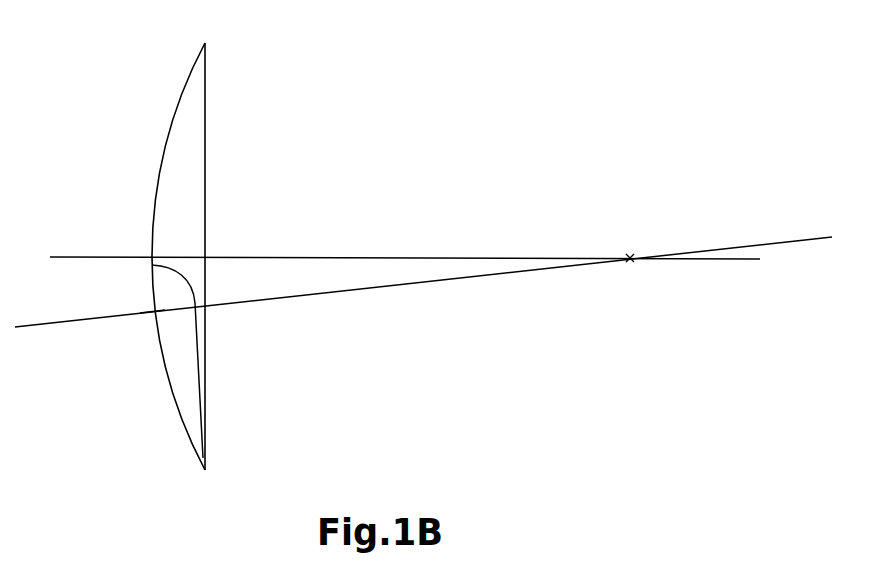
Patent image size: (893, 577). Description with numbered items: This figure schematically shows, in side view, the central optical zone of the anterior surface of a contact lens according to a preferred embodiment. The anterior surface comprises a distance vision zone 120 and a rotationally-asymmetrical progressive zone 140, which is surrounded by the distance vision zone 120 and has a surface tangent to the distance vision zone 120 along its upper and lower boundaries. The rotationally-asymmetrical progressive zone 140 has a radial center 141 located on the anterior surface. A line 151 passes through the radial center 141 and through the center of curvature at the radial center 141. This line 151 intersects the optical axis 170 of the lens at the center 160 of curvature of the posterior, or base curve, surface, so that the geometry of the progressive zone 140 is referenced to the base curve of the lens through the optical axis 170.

The distance vision zone 120 is at (175, 190).
The optical axis 170 is at (102, 257).
The line 151 is at (780, 239).
The center of curvature of the posterior (base curve) surface 160 is at (623, 253).
The radial center 141 is at (152, 312).
The rotationally-asymmetrical progressive zone 140 is at (175, 360).